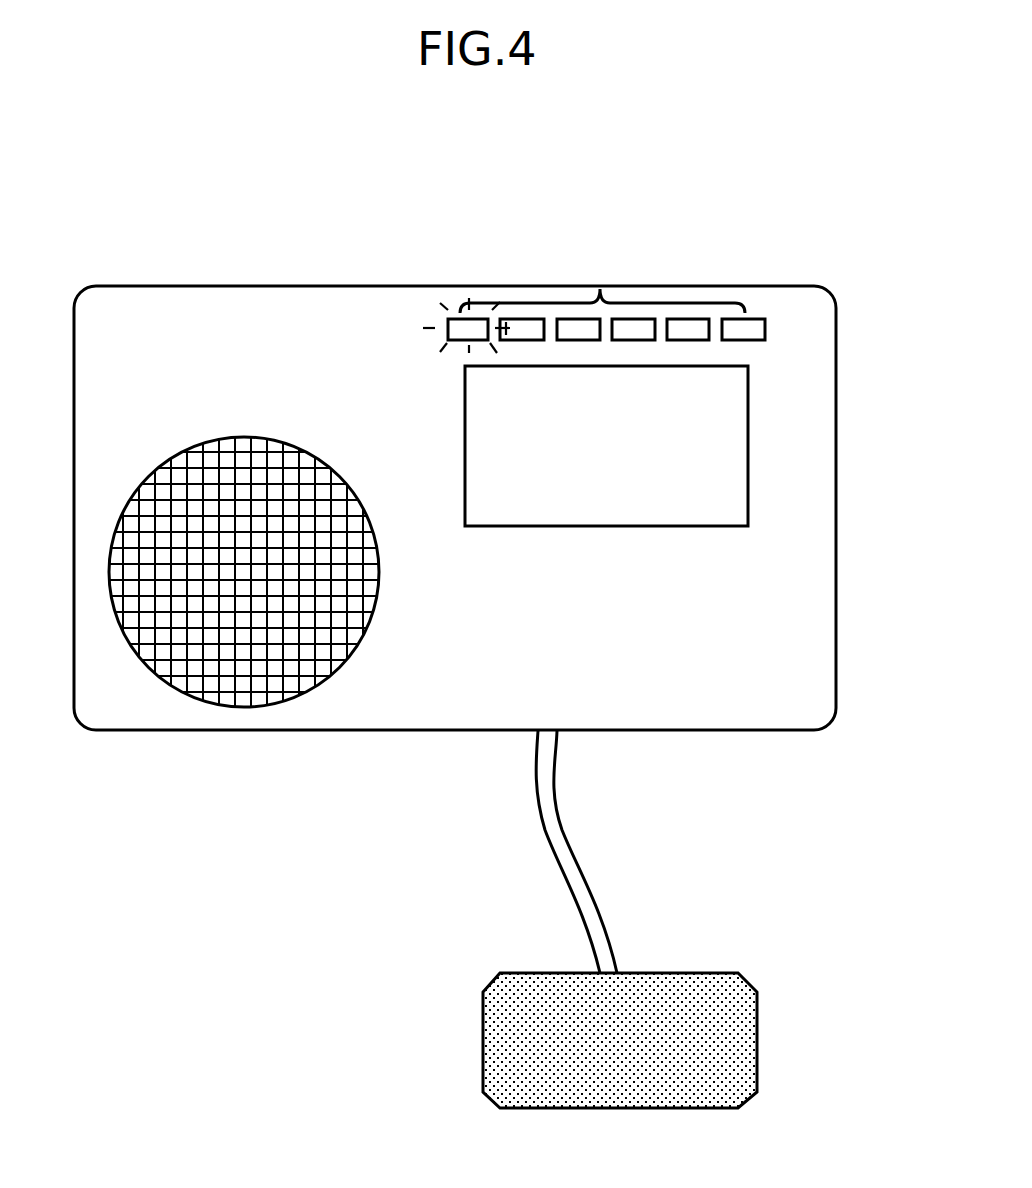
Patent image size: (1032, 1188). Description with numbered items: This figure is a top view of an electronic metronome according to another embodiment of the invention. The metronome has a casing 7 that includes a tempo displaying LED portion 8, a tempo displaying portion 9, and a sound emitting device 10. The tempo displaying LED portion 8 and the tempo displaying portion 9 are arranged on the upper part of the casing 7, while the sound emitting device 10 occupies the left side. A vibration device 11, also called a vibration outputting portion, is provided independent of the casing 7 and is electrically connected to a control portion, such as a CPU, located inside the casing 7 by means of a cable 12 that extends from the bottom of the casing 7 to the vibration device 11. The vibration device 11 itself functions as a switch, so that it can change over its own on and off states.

The main body (metronome unit) 7 is at (322, 333).
The beat indicator LEDs 8 is at (602, 267).
The tempo display 9 is at (716, 426).
The speaker 10 is at (229, 670).
The foot pedal / tap switch 11 is at (617, 1058).
The cable 12 is at (584, 856).